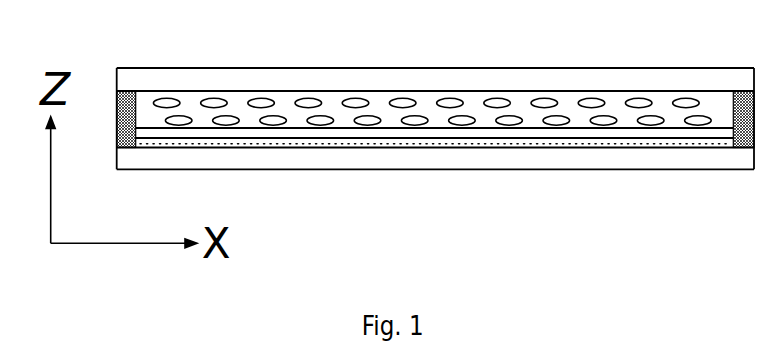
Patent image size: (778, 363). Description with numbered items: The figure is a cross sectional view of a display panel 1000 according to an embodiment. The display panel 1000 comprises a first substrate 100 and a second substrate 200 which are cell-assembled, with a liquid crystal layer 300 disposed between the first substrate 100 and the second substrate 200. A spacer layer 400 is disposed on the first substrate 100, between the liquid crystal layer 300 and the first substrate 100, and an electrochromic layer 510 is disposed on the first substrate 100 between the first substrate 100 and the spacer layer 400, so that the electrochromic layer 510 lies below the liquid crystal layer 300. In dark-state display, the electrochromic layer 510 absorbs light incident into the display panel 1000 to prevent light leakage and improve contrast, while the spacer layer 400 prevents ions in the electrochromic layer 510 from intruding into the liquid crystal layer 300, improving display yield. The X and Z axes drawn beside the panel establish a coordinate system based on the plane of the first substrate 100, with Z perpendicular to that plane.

The display panel 1000 is at (435, 149).
The first substrate 100 is at (435, 182).
The second substrate 200 is at (435, 58).
The liquid crystal layer 300 is at (432, 155).
The spacer layer 400 is at (435, 172).
The electrochromic layer 510 is at (435, 177).